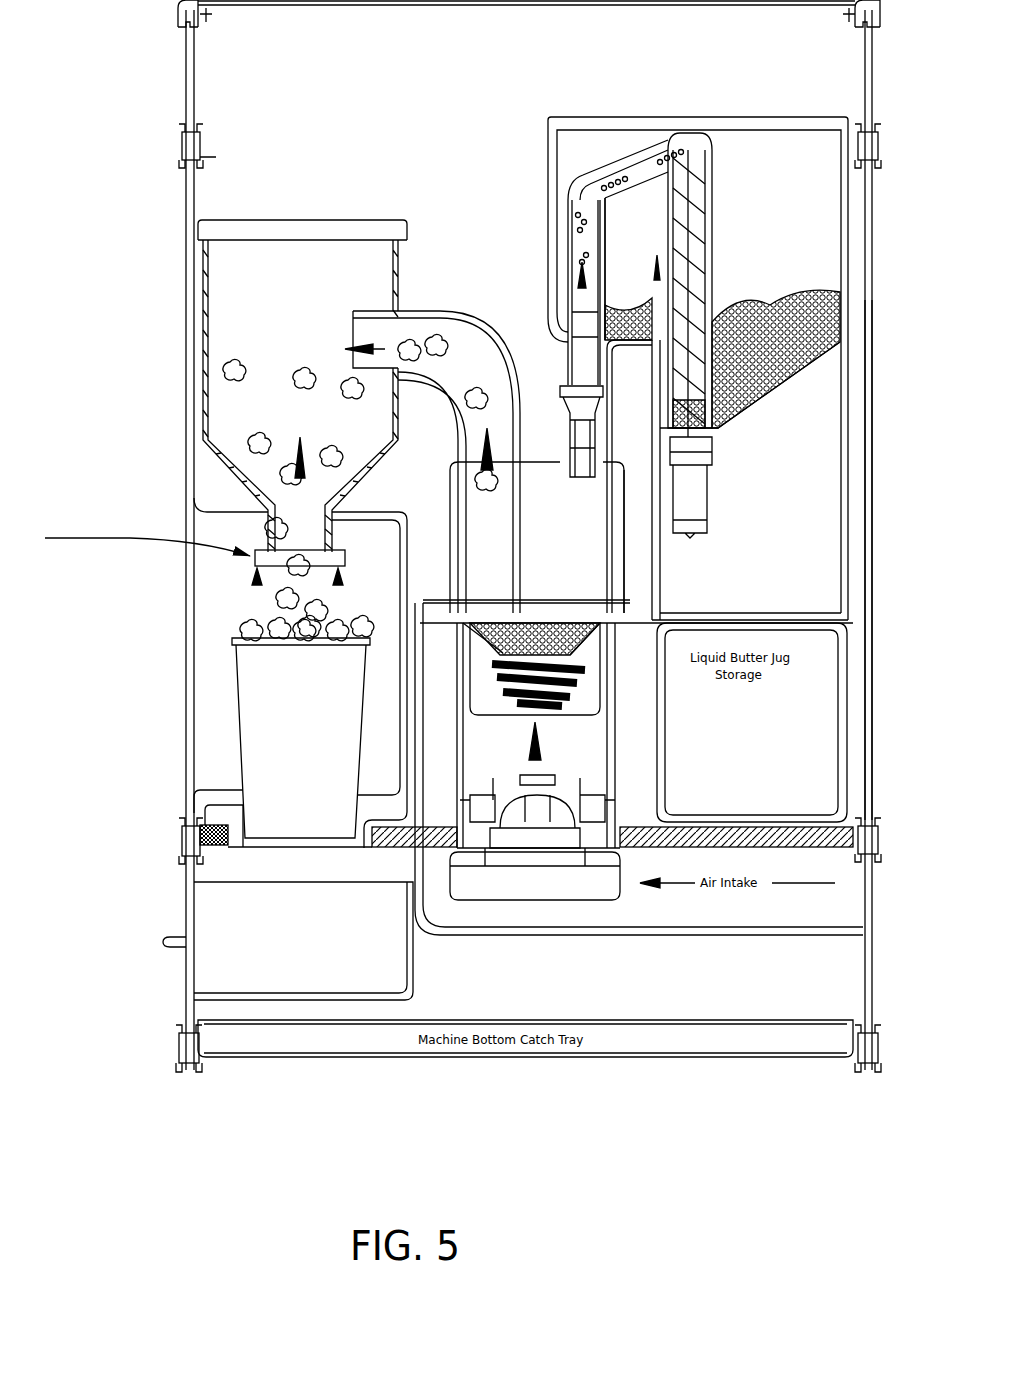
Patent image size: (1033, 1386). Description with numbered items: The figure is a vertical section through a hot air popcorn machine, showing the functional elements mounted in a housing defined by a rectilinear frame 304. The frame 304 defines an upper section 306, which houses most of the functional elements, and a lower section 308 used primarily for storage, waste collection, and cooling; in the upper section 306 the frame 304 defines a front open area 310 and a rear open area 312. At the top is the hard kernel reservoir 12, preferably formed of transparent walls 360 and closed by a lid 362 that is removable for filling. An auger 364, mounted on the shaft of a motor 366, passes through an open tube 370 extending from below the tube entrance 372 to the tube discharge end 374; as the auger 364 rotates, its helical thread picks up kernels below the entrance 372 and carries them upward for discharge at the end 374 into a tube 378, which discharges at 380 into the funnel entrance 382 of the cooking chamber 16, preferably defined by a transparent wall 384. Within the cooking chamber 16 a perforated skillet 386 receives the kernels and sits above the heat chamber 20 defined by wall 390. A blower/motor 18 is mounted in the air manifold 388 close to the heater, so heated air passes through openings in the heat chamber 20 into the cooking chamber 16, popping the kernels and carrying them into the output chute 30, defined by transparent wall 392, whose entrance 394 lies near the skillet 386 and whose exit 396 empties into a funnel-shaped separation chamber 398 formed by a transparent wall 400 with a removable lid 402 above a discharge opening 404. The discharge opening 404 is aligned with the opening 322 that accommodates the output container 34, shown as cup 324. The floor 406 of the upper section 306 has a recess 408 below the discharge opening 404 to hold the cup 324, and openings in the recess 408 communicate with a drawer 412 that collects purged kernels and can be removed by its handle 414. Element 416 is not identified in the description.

The reservoir 12 is at (744, 421).
The cooking chamber 16 is at (634, 578).
The blower/motor 18 is at (605, 803).
The heat chamber 20 is at (626, 756).
The output chute 30 is at (450, 497).
The output container 34 is at (231, 662).
The rectilinear frame 304 is at (180, 137).
The upper section 306 is at (876, 565).
The lower section 308 is at (882, 882).
The front open area 310 is at (180, 308).
The rear open area 312 is at (878, 284).
The opening 322 is at (176, 765).
The cup 324 is at (235, 710).
The transparent walls 360 is at (570, 200).
The lid 362 is at (632, 117).
The auger 364 is at (693, 245).
The motor 366 is at (710, 497).
The open tube 370 is at (712, 192).
The tube entrance 372 is at (733, 413).
The tube discharge end 374 is at (700, 156).
The tube 378 is at (562, 386).
The tube discharge 380 is at (545, 350).
The funnel entrance 382 is at (590, 413).
The transparent wall 384 is at (627, 547).
The skillet 386 is at (590, 637).
The air manifold 388 is at (583, 692).
The wall 390 is at (626, 672).
The transparent wall 392 is at (456, 538).
The chute entrance 394 is at (480, 612).
The chute exit 396 is at (368, 318).
The popcorn separation chamber 398 is at (402, 258).
The transparent wall 400 is at (402, 290).
The removable lid 402 is at (287, 220).
The discharge opening 404 is at (267, 577).
The floor 406 is at (180, 862).
The recess 408 is at (407, 847).
The drawer 412 is at (316, 923).
The handle 414 is at (170, 947).
The blower motor air intake shroud 416 is at (843, 915).